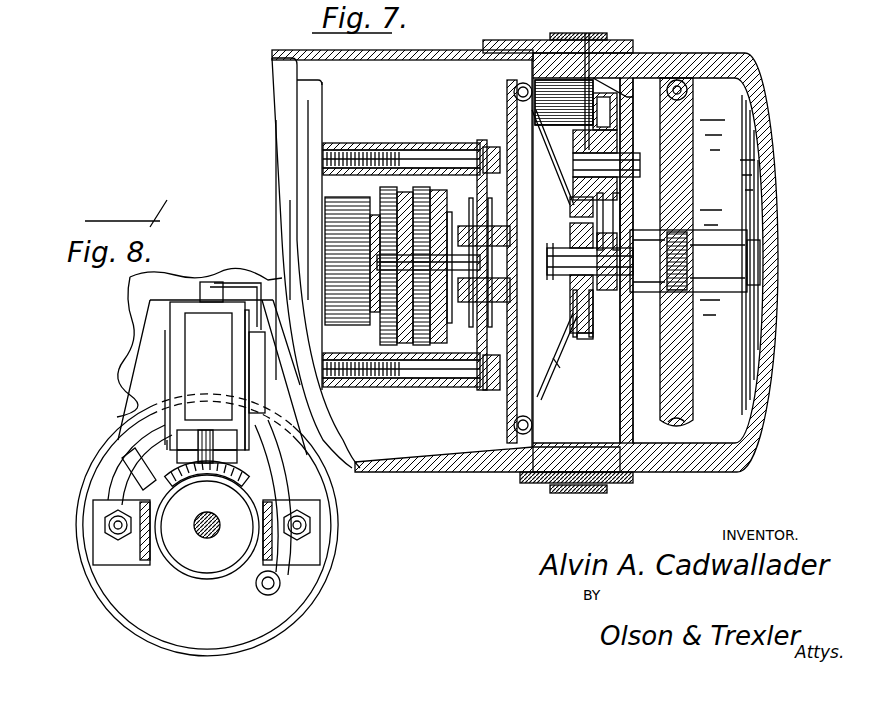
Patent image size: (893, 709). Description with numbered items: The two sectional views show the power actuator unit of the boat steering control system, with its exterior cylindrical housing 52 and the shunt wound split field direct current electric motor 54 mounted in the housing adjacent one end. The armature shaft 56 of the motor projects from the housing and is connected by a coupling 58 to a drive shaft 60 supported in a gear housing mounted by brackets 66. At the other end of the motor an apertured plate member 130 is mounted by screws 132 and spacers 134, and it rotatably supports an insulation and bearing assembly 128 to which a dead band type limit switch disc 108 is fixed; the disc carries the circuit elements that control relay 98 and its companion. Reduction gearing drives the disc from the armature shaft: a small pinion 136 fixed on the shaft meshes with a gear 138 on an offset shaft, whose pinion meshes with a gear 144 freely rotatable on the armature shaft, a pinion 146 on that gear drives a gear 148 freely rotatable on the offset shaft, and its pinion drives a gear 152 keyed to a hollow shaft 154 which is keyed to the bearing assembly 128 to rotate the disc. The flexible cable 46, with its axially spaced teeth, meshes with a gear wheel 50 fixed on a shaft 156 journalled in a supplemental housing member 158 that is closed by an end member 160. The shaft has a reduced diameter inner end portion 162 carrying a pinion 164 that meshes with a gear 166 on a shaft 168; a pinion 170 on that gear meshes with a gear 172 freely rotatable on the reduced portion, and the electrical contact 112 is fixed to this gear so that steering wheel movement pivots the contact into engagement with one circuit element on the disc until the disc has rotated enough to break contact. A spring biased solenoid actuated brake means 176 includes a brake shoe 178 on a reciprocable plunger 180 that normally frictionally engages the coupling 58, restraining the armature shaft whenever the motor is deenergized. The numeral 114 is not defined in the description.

In FIG. 7, the flexible cable 46 is at (693, 83).
In FIG. 7, the gear wheel 50 is at (680, 368).
In FIG. 7, the cylindrical housing 52 is at (432, 50).
In FIG. 7, the electric motor 54 is at (287, 63).
In FIG. 7, the armature shaft 56 is at (380, 317).
In FIG. 8, the coupling 58 is at (193, 557).
In FIG. 8, the drive shaft 60 is at (197, 527).
In FIG. 8, the brackets 66 is at (303, 557).
In FIG. 8, the relay 98 is at (122, 300).
In FIG. 7, the limit switch disc 108 is at (505, 85).
In FIG. 7, the electrical contact 112 is at (553, 367).
In FIG. 7, the bearing block 114 is at (570, 313).
In FIG. 7, the insulation and bearing assembly 128 is at (463, 357).
In FIG. 7, the plate member 130 is at (457, 187).
In FIG. 7, the screws 132 is at (352, 143).
In FIG. 7, the spacers 134 is at (380, 150).
In FIG. 7, the pinion 136 is at (378, 263).
In FIG. 7, the gear 138 is at (380, 210).
In FIG. 7, the gear 144 is at (380, 338).
In FIG. 7, the pinion 146 is at (422, 345).
In FIG. 7, the gear 148 is at (418, 160).
In FIG. 7, the gear 152 is at (450, 450).
In FIG. 7, the hollow shaft 154 is at (520, 265).
In FIG. 7, the shaft 156 is at (727, 245).
In FIG. 7, the housing member 158 is at (680, 470).
In FIG. 7, the end member 160 is at (757, 100).
In FIG. 7, the reduced diameter inner end portion 162 is at (558, 248).
In FIG. 7, the pinion 164 is at (580, 335).
In FIG. 7, the gear 166 is at (643, 77).
In FIG. 7, the shaft 168 is at (527, 135).
In FIG. 7, the pinion 170 is at (582, 60).
In FIG. 7, the gear 172 is at (576, 365).
In FIG. 8, the brake means 176 is at (152, 350).
In FIG. 8, the brake shoe 178 is at (173, 473).
In FIG. 8, the reciprocable plunger 180 is at (210, 443).